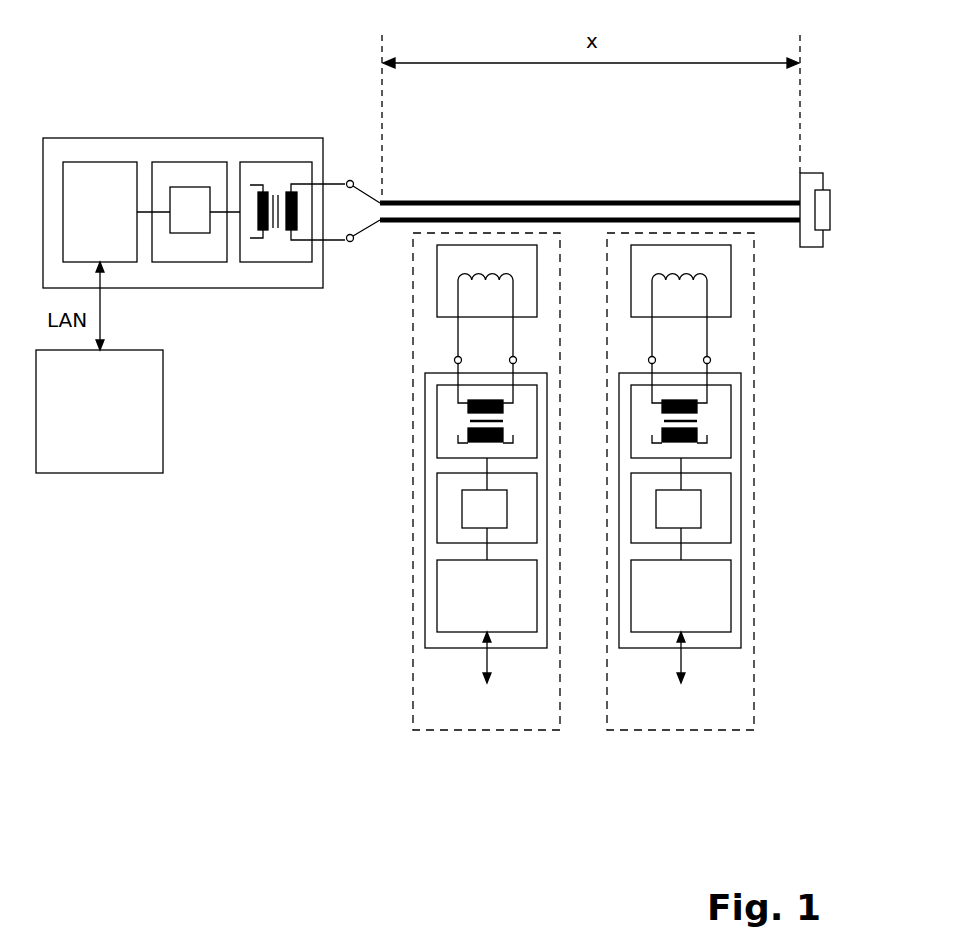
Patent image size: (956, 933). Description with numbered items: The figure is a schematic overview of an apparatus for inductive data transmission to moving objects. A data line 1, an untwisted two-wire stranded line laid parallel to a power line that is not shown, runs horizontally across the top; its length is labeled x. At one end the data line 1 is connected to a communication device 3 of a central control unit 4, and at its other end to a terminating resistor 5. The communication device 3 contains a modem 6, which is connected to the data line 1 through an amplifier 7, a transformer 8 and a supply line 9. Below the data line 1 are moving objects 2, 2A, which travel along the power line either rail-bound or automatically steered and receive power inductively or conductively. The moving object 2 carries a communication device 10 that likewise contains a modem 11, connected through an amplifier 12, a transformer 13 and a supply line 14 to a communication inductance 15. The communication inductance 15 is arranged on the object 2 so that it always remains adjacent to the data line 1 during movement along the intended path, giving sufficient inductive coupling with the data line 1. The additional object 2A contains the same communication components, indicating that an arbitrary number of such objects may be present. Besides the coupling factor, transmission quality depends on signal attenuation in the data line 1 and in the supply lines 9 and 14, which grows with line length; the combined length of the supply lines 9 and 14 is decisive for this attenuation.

The data line 1 is at (530, 200).
The moving object 2 is at (441, 532).
The additional moving object 2A is at (633, 718).
The communication device 3 is at (230, 283).
The central control unit 4 is at (95, 474).
The terminating resistor 5 is at (817, 232).
The modem 6 is at (97, 165).
The amplifier 7 is at (187, 165).
The transformer 8 is at (285, 165).
The supply line 9 is at (354, 186).
The communication device 10 is at (437, 642).
The modem 11 is at (445, 587).
The amplifier 12 is at (445, 503).
The transformer 13 is at (443, 421).
The supply line 14 is at (458, 343).
The communication inductance 15 is at (445, 290).